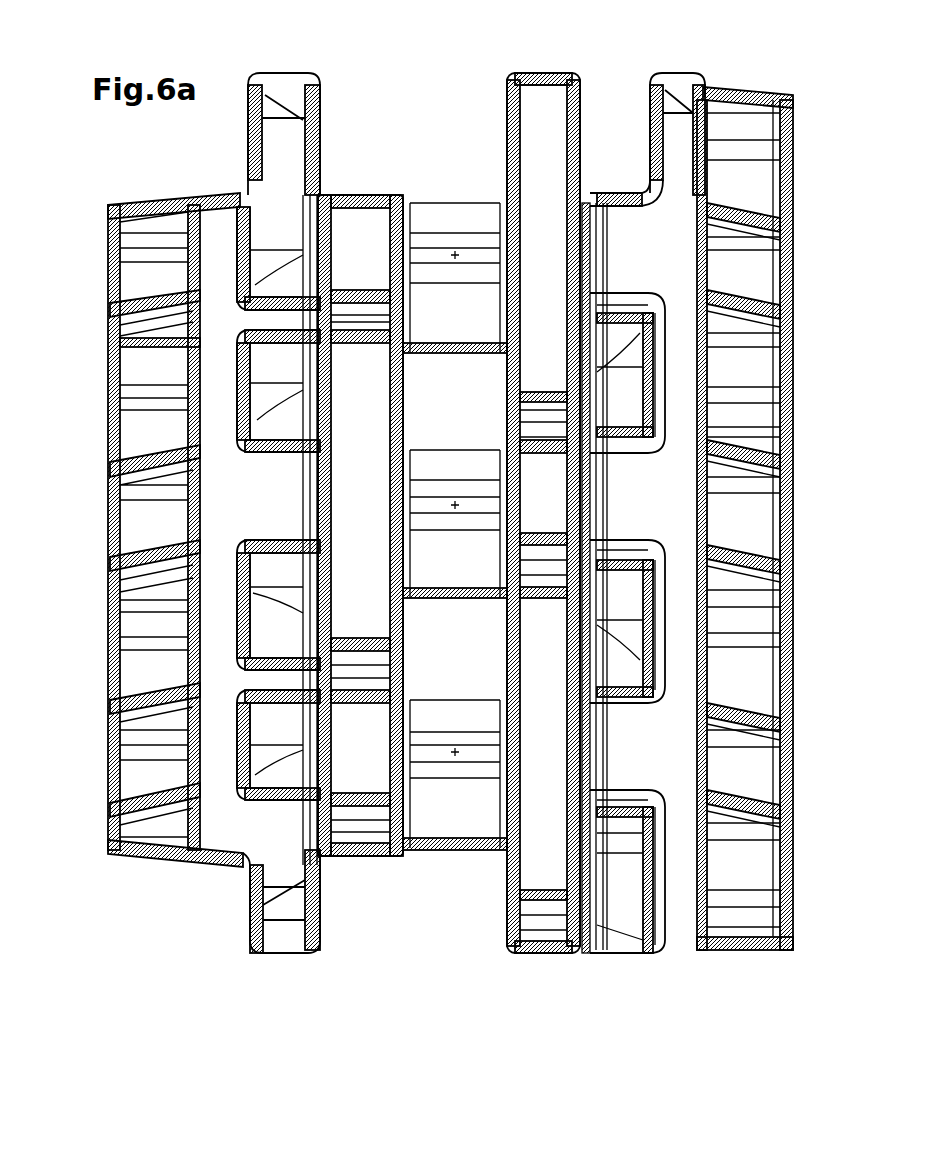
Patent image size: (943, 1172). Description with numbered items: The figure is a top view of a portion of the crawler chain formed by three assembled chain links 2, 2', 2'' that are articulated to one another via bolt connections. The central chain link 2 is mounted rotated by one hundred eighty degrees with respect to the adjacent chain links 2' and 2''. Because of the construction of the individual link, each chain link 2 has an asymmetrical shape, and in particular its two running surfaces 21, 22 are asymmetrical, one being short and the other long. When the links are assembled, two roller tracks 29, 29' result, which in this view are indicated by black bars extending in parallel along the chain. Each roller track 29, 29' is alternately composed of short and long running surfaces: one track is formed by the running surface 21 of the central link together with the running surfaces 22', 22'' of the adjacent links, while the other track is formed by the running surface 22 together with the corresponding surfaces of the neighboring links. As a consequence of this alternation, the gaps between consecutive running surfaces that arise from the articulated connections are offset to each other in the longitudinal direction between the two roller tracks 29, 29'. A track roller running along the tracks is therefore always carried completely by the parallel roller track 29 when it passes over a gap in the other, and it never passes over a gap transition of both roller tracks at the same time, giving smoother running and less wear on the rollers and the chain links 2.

The chain link 2 is at (180, 513).
The chain link 2' is at (117, 760).
The chain link 2'' is at (117, 279).
The running surface 21 is at (548, 498).
The running surface 22 is at (394, 525).
The running surface 22' is at (454, 610).
The running surface 22'' is at (591, 50).
The roller track 29 is at (509, 543).
The roller track 29' is at (651, 577).